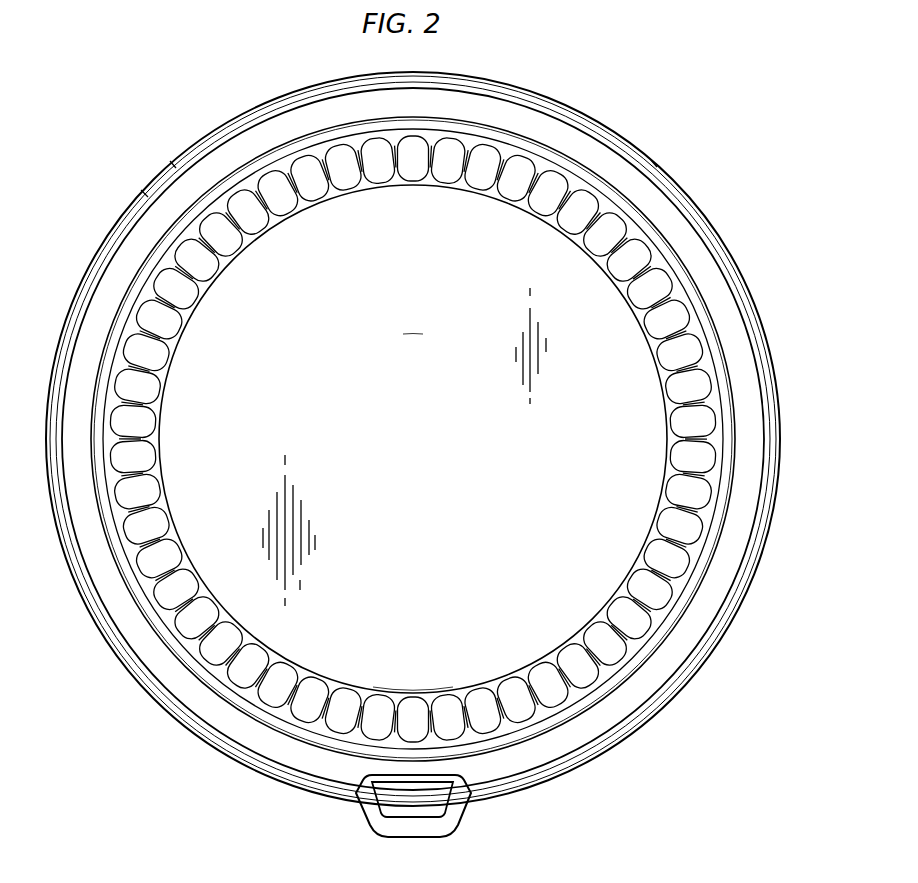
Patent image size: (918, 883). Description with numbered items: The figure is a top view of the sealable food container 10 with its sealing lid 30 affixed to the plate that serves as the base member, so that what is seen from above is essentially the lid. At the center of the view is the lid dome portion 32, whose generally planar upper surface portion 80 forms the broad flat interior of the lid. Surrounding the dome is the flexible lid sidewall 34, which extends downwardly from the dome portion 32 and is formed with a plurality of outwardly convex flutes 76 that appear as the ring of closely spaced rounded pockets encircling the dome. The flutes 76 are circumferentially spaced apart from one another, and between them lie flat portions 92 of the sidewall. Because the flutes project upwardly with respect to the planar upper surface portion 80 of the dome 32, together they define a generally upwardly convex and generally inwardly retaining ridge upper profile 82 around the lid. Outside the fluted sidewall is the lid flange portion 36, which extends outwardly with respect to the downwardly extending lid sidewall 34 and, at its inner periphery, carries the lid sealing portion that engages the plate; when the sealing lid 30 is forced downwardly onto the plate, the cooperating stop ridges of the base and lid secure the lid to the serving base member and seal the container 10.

The sealable food container 10 is at (143, 136).
The sealing lid 30 is at (246, 578).
The lid dome portion 32 is at (397, 342).
The flexible lid sidewall 34 is at (697, 361).
The lid flange portion 36 is at (612, 165).
The outwardly convex flutes 76 is at (232, 192).
The generally planar upper surface portion 80 is at (457, 512).
The retaining ridge upper profile 82 is at (483, 175).
The flat portions 92 is at (602, 197).